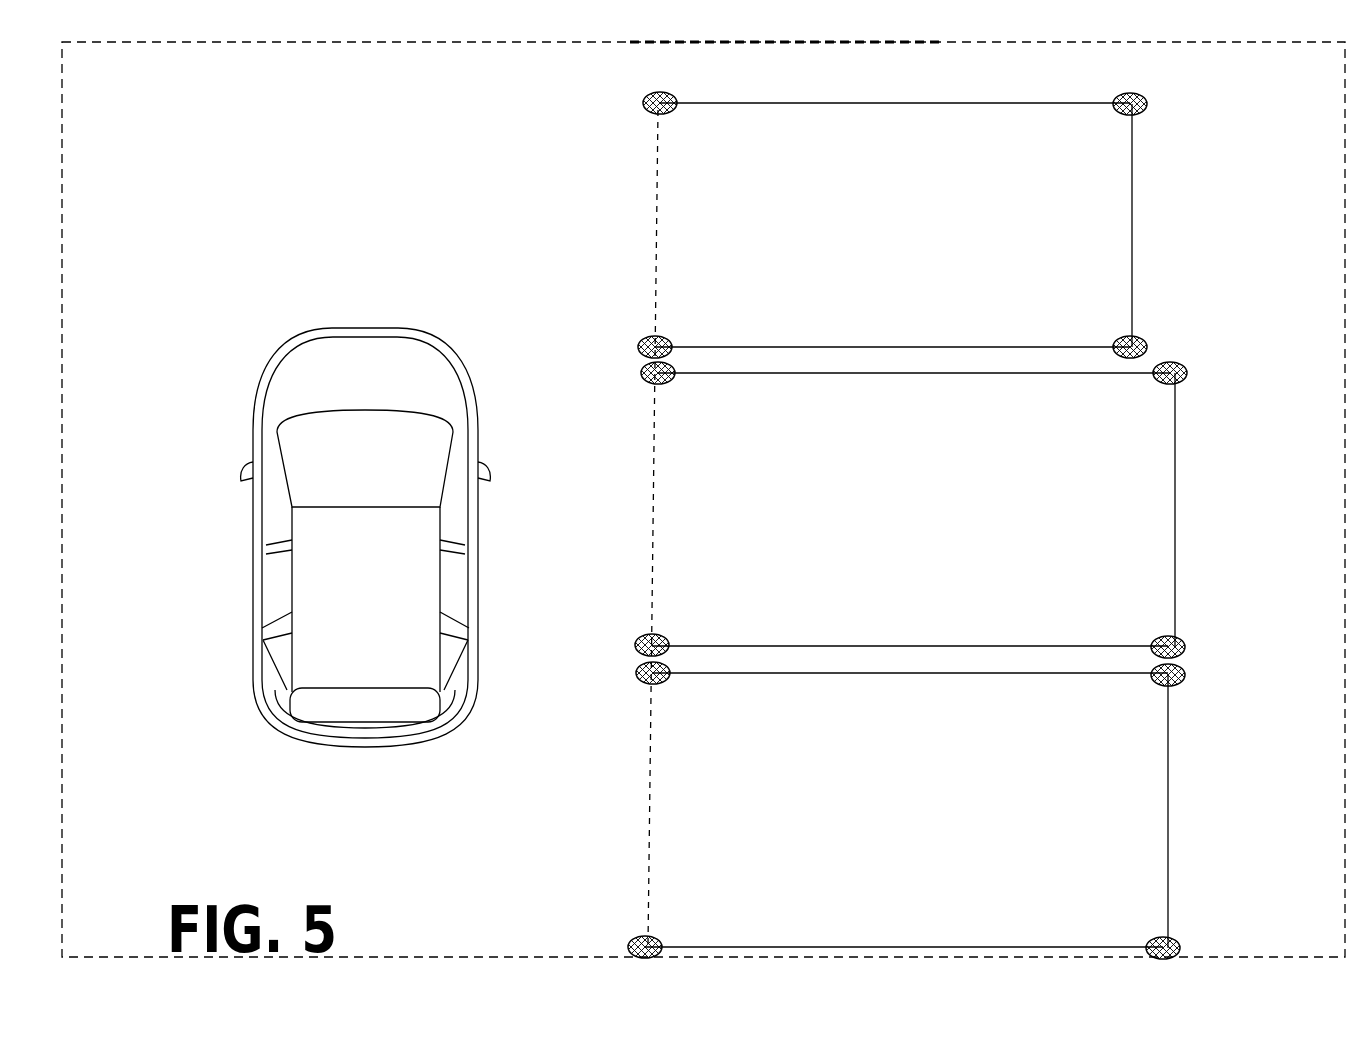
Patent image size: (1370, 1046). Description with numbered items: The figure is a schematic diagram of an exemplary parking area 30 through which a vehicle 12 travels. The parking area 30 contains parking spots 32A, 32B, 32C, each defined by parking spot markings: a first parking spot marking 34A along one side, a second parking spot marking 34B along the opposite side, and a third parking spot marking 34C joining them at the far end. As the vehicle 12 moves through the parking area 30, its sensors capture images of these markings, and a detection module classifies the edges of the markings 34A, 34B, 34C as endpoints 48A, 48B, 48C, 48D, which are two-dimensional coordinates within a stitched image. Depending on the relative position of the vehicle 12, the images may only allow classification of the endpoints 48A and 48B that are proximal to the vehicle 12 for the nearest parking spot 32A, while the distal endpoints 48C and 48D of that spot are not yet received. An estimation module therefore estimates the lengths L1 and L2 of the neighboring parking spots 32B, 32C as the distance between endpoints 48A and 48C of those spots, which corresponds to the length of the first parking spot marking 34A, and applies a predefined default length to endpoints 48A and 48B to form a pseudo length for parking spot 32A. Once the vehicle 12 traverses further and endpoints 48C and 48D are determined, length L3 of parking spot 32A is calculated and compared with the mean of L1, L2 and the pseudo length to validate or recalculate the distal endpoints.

The vehicle 12 is at (358, 385).
The parking area 30 is at (461, 936).
The parking spot 32A is at (1178, 102).
The parking spot 32B is at (1213, 373).
The parking spot 32C is at (1208, 673).
The first parking spot marking 34A is at (900, 106).
The second parking spot marking 34B is at (915, 350).
The third parking spot marking 34C is at (1132, 240).
The endpoint 48A is at (660, 102).
The endpoint 48B is at (664, 345).
The endpoint 48C is at (1130, 102).
The endpoint 48D is at (1131, 346).
The length L1 is at (1167, 718).
The length L2 is at (1174, 415).
The length L3 is at (1133, 128).